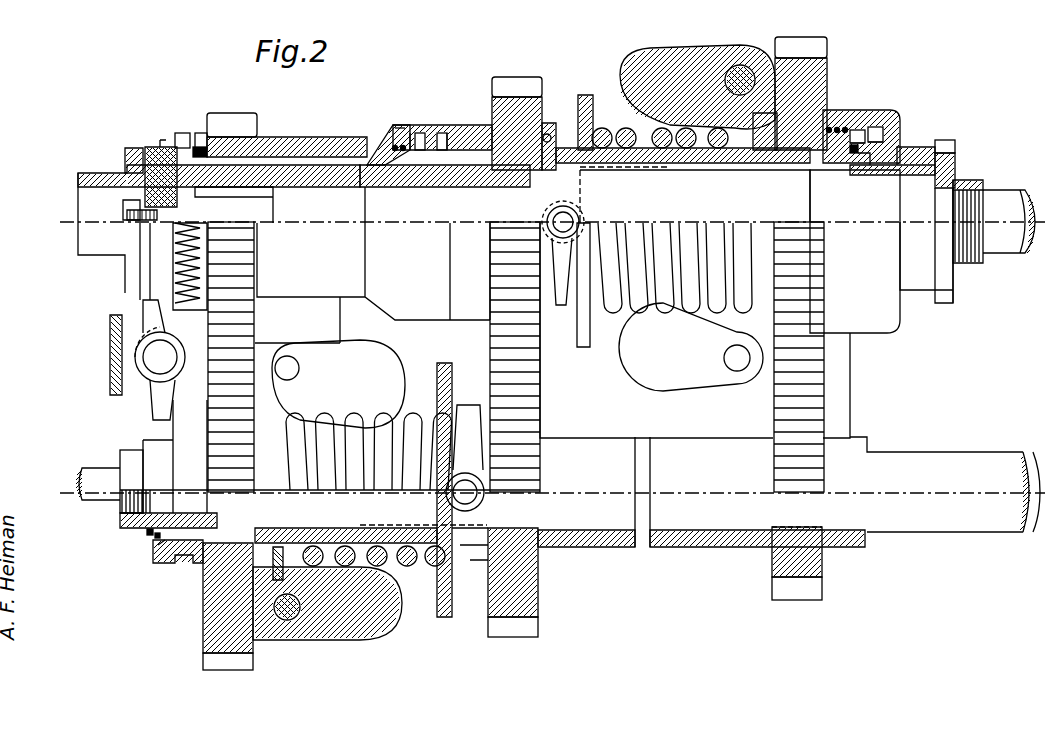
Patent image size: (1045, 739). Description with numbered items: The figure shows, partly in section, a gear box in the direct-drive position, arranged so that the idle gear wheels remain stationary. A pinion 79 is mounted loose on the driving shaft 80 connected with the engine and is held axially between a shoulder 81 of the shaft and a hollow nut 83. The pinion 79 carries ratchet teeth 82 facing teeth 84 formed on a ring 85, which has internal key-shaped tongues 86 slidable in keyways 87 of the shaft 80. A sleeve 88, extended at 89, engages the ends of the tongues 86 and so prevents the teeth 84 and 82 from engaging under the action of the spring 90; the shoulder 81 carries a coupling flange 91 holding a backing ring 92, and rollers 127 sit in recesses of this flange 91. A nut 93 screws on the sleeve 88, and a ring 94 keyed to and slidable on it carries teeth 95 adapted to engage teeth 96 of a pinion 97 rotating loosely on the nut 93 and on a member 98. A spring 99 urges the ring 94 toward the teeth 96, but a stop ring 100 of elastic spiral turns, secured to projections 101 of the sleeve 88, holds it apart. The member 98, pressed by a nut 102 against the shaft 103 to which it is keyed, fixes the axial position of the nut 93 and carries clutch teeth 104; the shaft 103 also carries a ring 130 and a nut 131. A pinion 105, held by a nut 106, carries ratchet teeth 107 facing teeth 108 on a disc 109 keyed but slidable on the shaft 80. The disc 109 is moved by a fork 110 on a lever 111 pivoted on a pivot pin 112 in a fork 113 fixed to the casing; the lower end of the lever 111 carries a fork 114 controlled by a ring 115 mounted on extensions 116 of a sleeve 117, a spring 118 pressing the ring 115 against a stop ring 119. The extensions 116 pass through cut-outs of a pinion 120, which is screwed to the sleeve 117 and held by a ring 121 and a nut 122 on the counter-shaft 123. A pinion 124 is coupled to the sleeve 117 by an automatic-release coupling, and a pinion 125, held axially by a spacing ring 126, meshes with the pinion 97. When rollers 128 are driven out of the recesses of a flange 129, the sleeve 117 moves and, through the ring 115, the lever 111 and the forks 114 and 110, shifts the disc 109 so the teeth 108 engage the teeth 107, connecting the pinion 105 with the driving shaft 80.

The pinion 79 is at (517, 100).
The driving shaft 80 is at (323, 177).
The shoulder 81 is at (549, 125).
The ratchet teeth 82 is at (447, 133).
The hollow nut 83 is at (398, 128).
The teeth 84 is at (427, 137).
The ring 85 is at (410, 133).
The tongues 86 is at (490, 165).
The keyways 87 is at (380, 150).
The sleeve 88 is at (612, 128).
The extension of sleeve 89 is at (585, 95).
The spring 90 is at (395, 155).
The coupling flange 91 is at (558, 305).
The backing ring 92 is at (549, 135).
The nut 93 is at (770, 133).
The ring 94 is at (857, 128).
The teeth 95 is at (875, 127).
The teeth 96 is at (897, 115).
The pinion 97 is at (812, 80).
The member 98 is at (950, 170).
The spring 99 is at (833, 127).
The stop ring 100 is at (867, 158).
The projections 101 is at (853, 155).
The nut 102 is at (970, 185).
The shaft 103 is at (298, 200).
The clutch teeth 104 is at (947, 142).
The pinion 105 is at (233, 140).
The nut 106 is at (200, 147).
The ratchet teeth 107 is at (199, 133).
The teeth 108 is at (182, 133).
The disc 109 is at (160, 140).
The fork 110 is at (165, 263).
The lever 111 is at (163, 318).
The pivot pin 112 is at (158, 355).
The fork 113 is at (125, 380).
The fork 114 is at (167, 437).
The ring 115 is at (182, 550).
The extensions 116 is at (147, 532).
The sleeve 117 is at (333, 540).
The spring 118 is at (160, 547).
The stop ring 119 is at (156, 536).
The pinion 120 is at (225, 625).
The ring 121 is at (180, 515).
The nut 122 is at (123, 519).
The counter-shaft 123 is at (100, 475).
The pinion 124 is at (520, 583).
The pinion 125 is at (797, 560).
The spacing ring 126 is at (725, 548).
The rollers 127 is at (563, 201).
The rollers 128 is at (440, 545).
The flange 129 is at (478, 400).
The ring 130 is at (152, 150).
The nut 131 is at (130, 165).